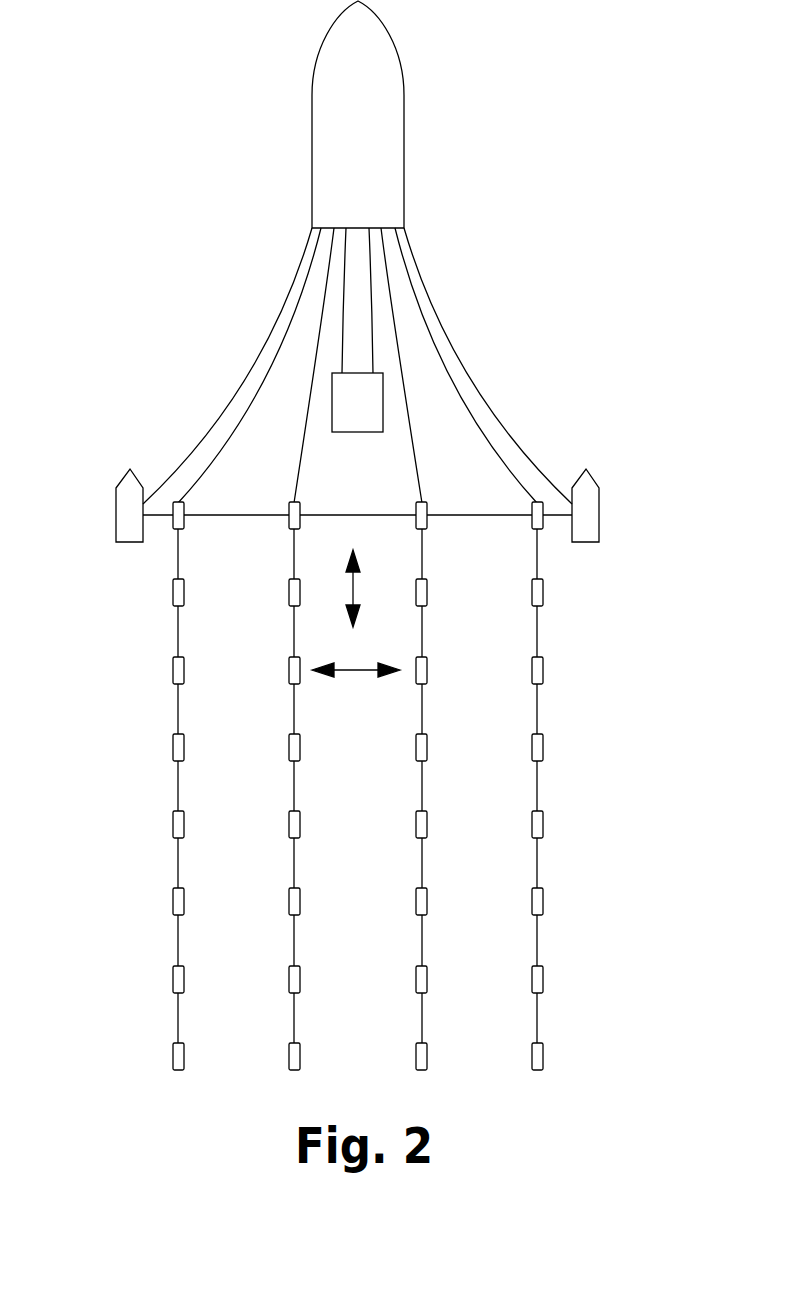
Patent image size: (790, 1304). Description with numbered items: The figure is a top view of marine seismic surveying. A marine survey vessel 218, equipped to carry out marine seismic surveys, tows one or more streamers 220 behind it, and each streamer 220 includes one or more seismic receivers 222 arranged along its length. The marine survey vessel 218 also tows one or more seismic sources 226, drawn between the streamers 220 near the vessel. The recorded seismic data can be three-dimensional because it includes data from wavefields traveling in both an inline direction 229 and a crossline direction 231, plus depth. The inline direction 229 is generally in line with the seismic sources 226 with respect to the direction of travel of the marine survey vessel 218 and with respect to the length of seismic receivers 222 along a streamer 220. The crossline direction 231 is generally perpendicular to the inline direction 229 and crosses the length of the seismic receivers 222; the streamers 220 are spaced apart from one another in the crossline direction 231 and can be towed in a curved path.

The marine survey vessel 218 is at (405, 113).
The streamer 220 is at (114, 786).
The seismic receiver 222 is at (173, 592).
The seismic source 226 is at (357, 432).
The inline direction 229 is at (355, 590).
The crossline direction 231 is at (353, 672).